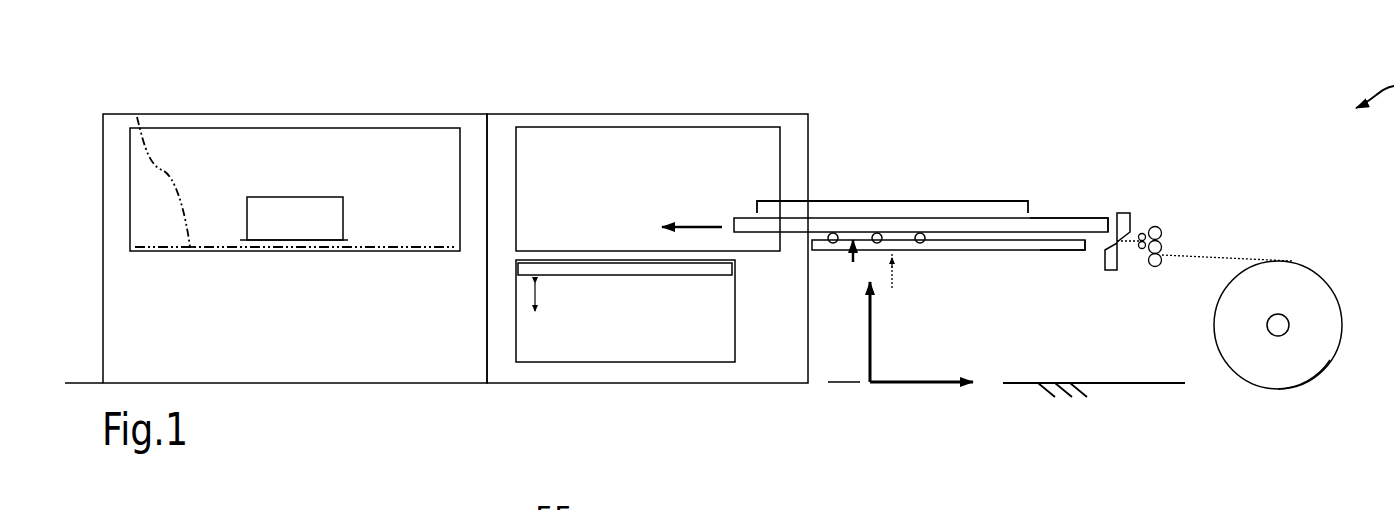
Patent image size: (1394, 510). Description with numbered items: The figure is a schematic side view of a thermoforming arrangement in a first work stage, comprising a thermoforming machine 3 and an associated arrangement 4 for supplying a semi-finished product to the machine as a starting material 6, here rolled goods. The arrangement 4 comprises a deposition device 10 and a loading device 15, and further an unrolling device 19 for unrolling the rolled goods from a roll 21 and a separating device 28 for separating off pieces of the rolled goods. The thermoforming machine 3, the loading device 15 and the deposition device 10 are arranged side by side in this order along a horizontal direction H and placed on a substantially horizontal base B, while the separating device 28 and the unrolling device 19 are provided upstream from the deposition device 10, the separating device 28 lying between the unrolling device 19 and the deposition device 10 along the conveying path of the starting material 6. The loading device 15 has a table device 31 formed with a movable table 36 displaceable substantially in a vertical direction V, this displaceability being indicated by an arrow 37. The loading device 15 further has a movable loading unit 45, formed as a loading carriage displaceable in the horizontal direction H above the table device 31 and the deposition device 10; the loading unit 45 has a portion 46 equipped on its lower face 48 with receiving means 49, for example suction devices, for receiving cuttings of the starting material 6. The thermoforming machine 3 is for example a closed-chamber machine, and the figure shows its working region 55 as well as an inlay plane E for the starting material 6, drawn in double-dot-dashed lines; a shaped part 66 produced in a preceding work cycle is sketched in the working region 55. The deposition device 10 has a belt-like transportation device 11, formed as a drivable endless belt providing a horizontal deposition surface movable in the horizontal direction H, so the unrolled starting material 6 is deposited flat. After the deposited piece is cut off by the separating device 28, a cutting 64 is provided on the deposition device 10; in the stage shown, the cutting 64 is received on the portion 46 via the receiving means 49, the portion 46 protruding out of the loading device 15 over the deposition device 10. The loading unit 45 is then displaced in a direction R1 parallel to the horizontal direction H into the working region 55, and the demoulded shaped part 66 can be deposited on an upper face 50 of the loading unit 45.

The thermoforming machine 3 is at (302, 107).
The working region 55 is at (395, 193).
The shaped part 66 is at (320, 225).
The inlay plane E is at (138, 128).
The loading device 15 is at (767, 108).
The direction R1 is at (697, 227).
The table device 31 is at (610, 293).
The movable table 36 is at (650, 272).
The arrow 37 is at (538, 308).
The upper face 50 is at (846, 210).
The portion 46 is at (893, 200).
The movable loading unit 45 is at (1038, 220).
The lower face 48 is at (850, 250).
The receiving means 49 is at (833, 243).
The cutting 64 is at (908, 243).
The deposition device 10 is at (892, 290).
The belt-like transportation device 11 is at (1063, 250).
The separating device 28 is at (1122, 205).
The starting material 6 is at (1197, 255).
The unrolling device 19 is at (1295, 248).
The roll 21 is at (1307, 372).
The arrangement 4 is at (1250, 448).
The vertical direction V is at (866, 338).
The horizontal direction H is at (938, 382).
The base B is at (1108, 393).